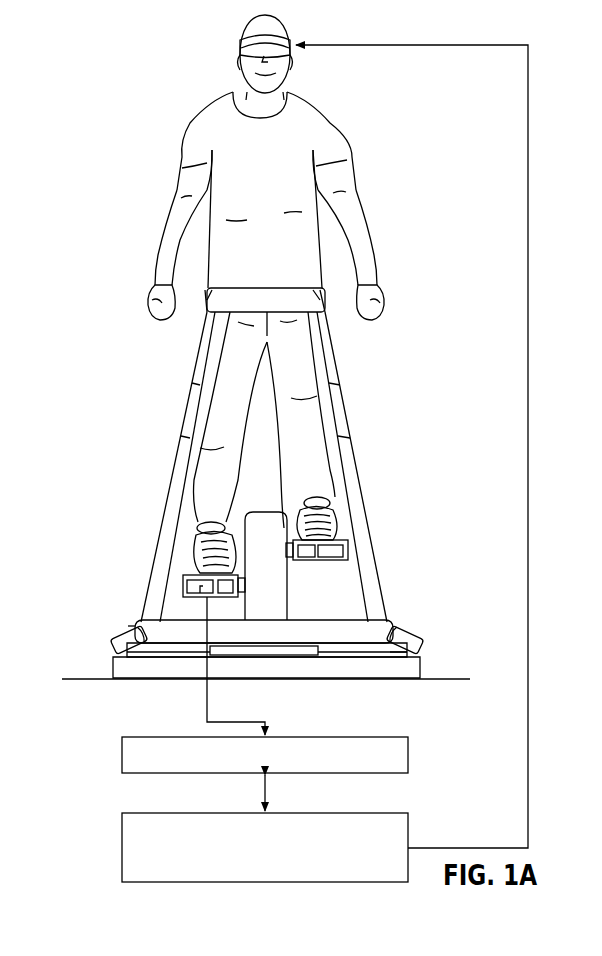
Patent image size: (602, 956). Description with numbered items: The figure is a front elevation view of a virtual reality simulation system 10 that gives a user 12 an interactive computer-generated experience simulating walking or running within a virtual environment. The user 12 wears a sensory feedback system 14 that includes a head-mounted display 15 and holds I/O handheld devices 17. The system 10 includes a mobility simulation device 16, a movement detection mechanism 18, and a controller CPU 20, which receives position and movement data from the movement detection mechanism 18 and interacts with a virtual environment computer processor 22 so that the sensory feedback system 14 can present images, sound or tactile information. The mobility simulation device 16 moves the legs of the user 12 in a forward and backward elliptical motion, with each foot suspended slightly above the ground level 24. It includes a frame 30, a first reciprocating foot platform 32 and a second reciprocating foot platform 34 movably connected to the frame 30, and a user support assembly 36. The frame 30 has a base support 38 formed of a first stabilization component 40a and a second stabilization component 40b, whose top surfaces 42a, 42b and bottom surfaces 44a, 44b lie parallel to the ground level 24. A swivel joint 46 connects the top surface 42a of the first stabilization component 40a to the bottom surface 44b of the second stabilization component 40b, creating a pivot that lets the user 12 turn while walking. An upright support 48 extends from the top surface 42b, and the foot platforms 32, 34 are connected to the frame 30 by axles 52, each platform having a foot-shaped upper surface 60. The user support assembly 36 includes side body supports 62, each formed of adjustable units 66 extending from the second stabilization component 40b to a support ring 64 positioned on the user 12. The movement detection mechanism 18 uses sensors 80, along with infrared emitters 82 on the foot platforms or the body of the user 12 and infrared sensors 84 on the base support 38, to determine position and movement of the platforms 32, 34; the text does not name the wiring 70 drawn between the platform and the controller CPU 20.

The virtual reality simulation system 10 is at (93, 55).
The user 12 is at (343, 130).
The sensory feedback system 14 is at (296, 32).
The head-mounted display 15 is at (243, 44).
The mobility simulation device 16 is at (375, 480).
The I/O handheld devices 17 is at (152, 305).
The movement detection mechanism 18 is at (200, 597).
The controller computer processor unit (CPU) 20 is at (122, 752).
The virtual environment computer processor 22 is at (122, 848).
The ground level 24 is at (457, 681).
The frame 30 is at (131, 622).
The first reciprocating foot platform 32 is at (180, 587).
The second reciprocating foot platform 34 is at (351, 552).
The user support assembly 36 is at (205, 290).
The base support 38 is at (416, 645).
The first stabilization component 40a is at (118, 673).
The second stabilization component 40b is at (392, 635).
The top surface of the first stabilization component 42a is at (120, 650).
The top surface of the second stabilization component 42b is at (368, 605).
The bottom surface of the first stabilization component 44a is at (126, 678).
The bottom surface of the second stabilization component 44b is at (387, 660).
The swivel joint 46 is at (297, 658).
The upright support 48 is at (262, 512).
The axles 52 is at (240, 597).
The upper surface 60 is at (243, 510).
The side body supports 62 is at (158, 503).
The support ring 64 is at (318, 298).
The units 66 is at (197, 388).
The signal wire 70 is at (205, 705).
The sensors 80 is at (190, 593).
The infrared emitter 82 is at (328, 530).
The infrared sensor 84 is at (414, 628).